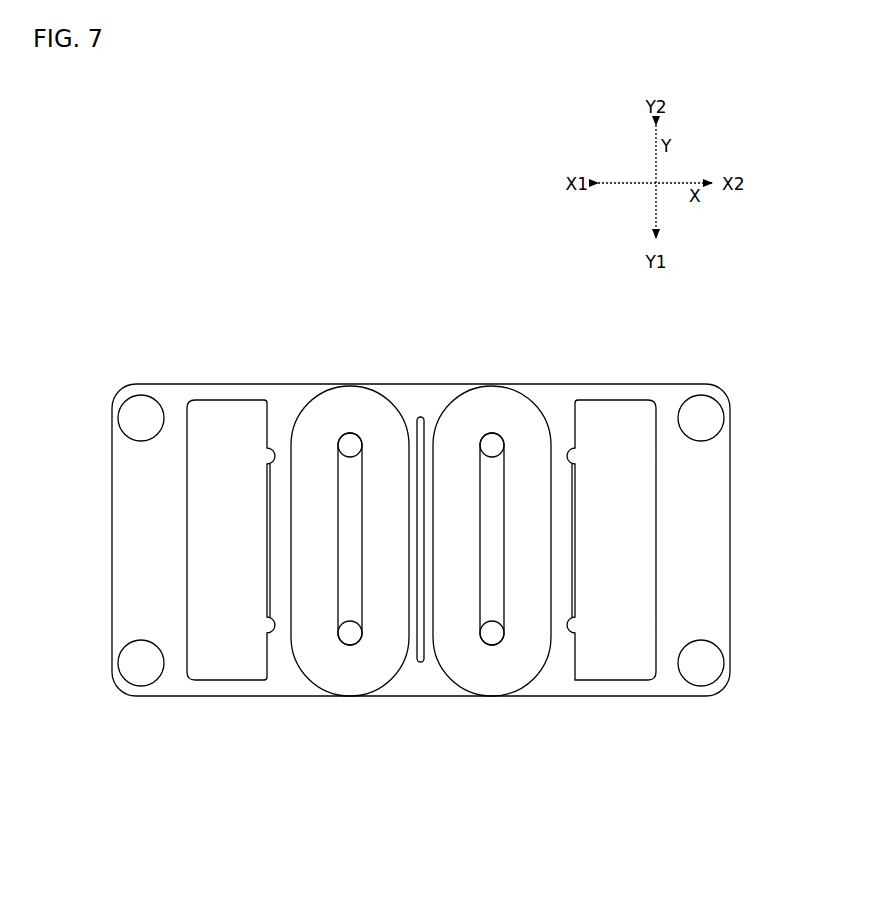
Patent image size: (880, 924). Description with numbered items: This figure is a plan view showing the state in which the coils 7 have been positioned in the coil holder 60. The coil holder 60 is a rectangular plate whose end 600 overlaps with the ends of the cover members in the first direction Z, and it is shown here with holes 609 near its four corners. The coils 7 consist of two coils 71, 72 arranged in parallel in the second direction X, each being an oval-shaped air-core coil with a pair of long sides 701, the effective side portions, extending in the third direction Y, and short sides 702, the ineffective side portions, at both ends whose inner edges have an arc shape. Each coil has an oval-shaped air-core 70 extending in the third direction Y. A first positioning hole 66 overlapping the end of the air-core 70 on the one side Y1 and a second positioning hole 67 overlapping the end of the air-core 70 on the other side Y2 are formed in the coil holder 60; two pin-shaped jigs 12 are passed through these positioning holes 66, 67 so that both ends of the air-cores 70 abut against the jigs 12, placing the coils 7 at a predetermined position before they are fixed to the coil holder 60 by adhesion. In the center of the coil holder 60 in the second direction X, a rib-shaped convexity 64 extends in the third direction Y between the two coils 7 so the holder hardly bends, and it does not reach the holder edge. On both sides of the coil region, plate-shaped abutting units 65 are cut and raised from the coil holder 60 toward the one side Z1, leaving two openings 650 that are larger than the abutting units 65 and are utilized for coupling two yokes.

The coil holder 60 is at (450, 495).
The end of the coil holder 600 is at (713, 532).
The mounting hole 609 is at (108, 389).
The openings 650 is at (228, 681).
The abutting units 65 is at (267, 524).
The rib-shaped convexity 64 is at (422, 418).
The coils 7 is at (411, 500).
The coil 71 is at (308, 396).
The coil 72 is at (481, 385).
The air-core 70 is at (363, 613).
The long sides 701 is at (373, 570).
The short sides 702 is at (347, 400).
The jigs 12 is at (468, 561).
The second positioning hole 67 is at (352, 440).
The first positioning hole 66 is at (352, 640).